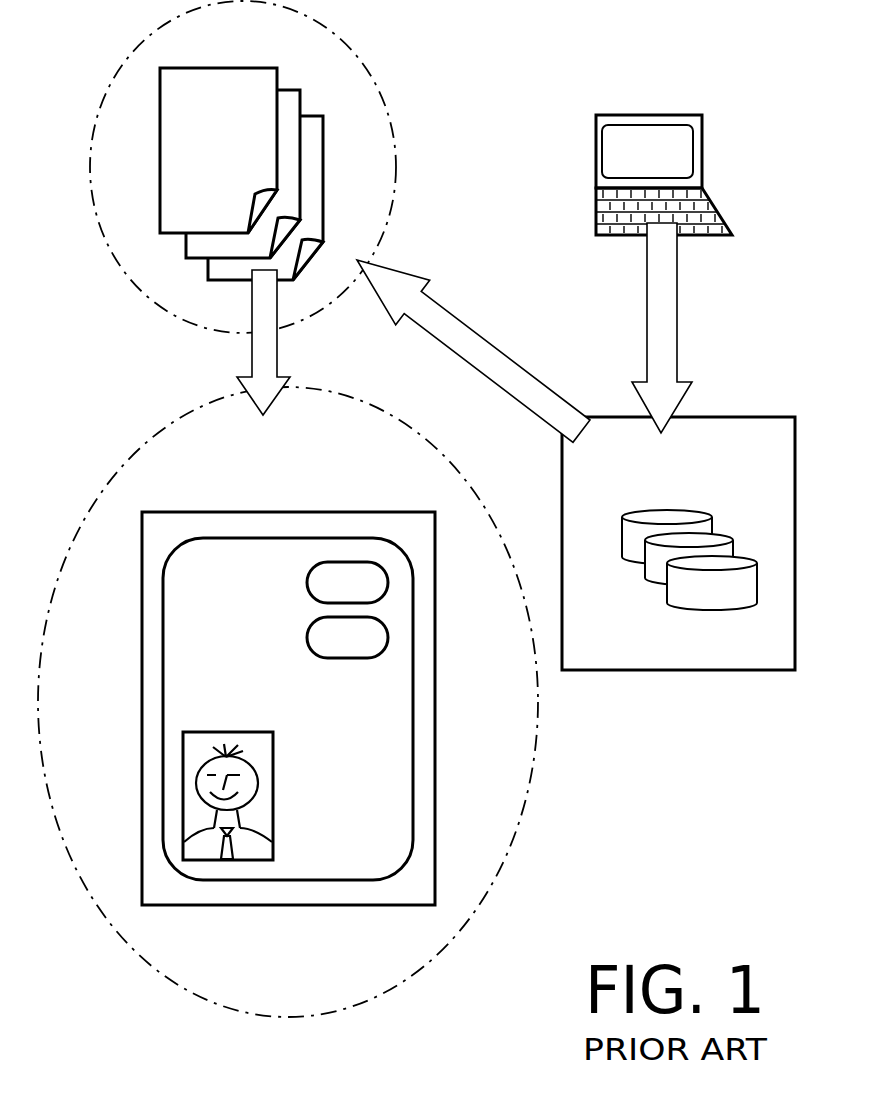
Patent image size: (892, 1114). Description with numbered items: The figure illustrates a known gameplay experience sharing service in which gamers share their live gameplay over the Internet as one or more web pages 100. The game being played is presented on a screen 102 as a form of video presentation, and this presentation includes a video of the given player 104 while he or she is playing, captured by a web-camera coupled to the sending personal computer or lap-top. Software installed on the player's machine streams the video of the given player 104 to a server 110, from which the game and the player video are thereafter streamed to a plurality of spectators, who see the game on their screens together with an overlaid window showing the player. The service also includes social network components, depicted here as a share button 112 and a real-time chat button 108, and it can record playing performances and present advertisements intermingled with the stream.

The web pages 100 is at (241, 141).
The screen 102 is at (250, 562).
The given player 104 is at (200, 747).
The real-time chat button 108 is at (367, 635).
The server 110 is at (761, 471).
The share button 112 is at (345, 578).